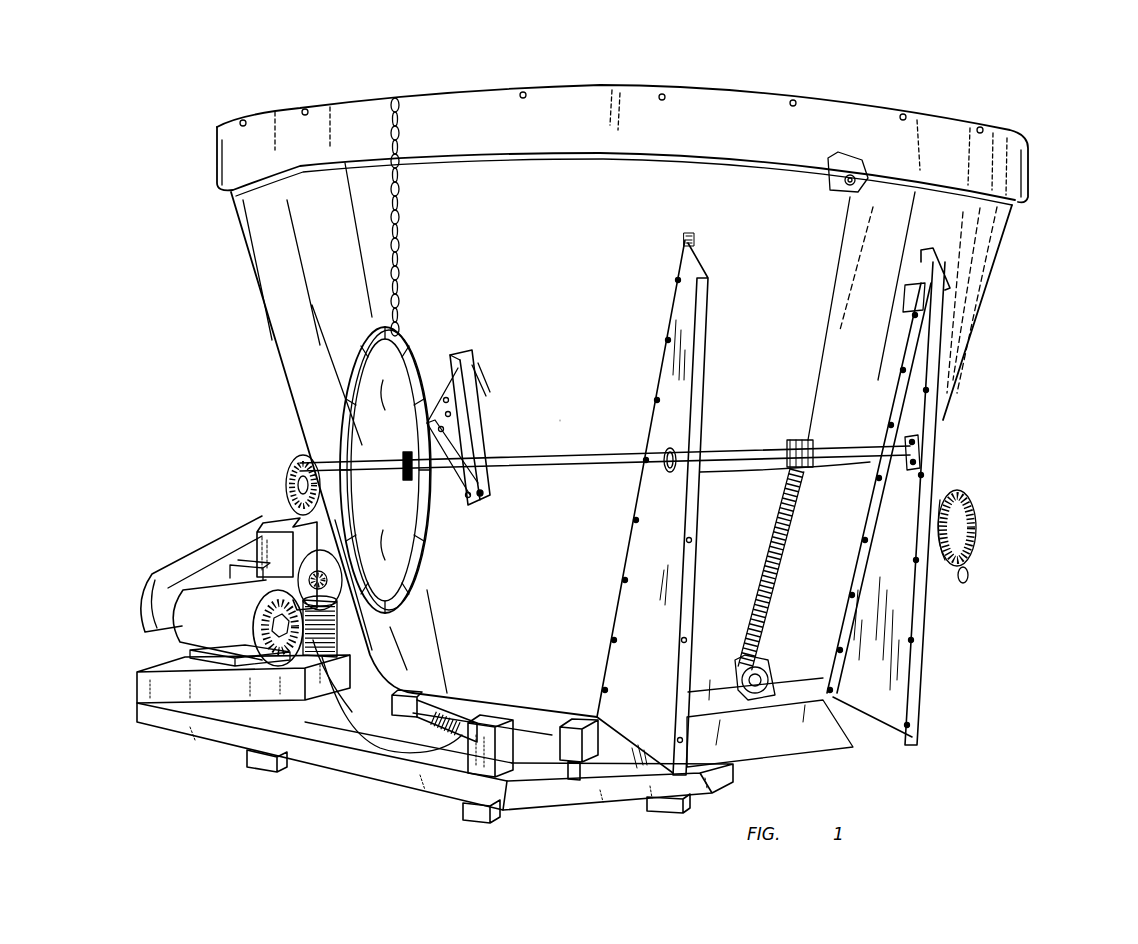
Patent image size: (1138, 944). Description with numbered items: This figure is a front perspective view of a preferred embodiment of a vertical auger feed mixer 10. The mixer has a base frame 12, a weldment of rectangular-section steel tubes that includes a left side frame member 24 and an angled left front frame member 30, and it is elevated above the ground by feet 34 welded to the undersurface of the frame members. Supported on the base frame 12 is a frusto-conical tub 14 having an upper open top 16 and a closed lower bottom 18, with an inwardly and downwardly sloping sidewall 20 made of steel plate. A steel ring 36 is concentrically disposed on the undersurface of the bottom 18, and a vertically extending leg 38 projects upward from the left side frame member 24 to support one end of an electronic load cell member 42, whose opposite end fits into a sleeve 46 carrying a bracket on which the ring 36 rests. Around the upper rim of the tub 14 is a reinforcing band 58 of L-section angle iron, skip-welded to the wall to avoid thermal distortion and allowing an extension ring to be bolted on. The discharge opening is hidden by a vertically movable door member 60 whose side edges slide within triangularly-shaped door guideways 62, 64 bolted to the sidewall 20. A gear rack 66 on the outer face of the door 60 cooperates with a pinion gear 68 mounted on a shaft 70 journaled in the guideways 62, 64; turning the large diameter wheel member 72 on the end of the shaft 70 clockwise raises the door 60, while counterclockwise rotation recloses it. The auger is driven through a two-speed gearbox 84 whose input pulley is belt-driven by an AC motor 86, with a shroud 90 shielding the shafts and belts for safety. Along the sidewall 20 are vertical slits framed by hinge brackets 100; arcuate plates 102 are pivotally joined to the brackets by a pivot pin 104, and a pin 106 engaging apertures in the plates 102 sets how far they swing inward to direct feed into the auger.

The vertical auger feed mixer 10 is at (1030, 105).
The base frame 12 is at (382, 786).
The tub 14 is at (257, 289).
The upper open top 16 is at (435, 87).
The closed lower bottom 18 is at (352, 735).
The sidewall 20 is at (551, 257).
The left side frame member 24 is at (443, 793).
The angled left front frame member 30 is at (605, 793).
The feet 34 is at (250, 765).
The steel ring 36 is at (562, 762).
The vertically extending leg 38 is at (487, 733).
The electronic load cell member 42 is at (437, 727).
The sleeve 46 is at (395, 714).
The reinforcing band 58 is at (810, 115).
The door member 60 is at (809, 545).
The door guideway 62 is at (923, 645).
The door guideway 64 is at (626, 689).
The gear rack 66 is at (770, 540).
The pinion gear 68 is at (807, 440).
The shaft 70 is at (743, 452).
The wheel member 72 is at (407, 343).
The two-speed gearbox 84 is at (260, 527).
The AC motor 86 is at (200, 627).
The shroud 90 is at (217, 547).
The hinge brackets 100 is at (473, 363).
The arcuate plates 102 is at (443, 417).
The pivot pin 104 is at (487, 493).
The pin 106 is at (487, 383).